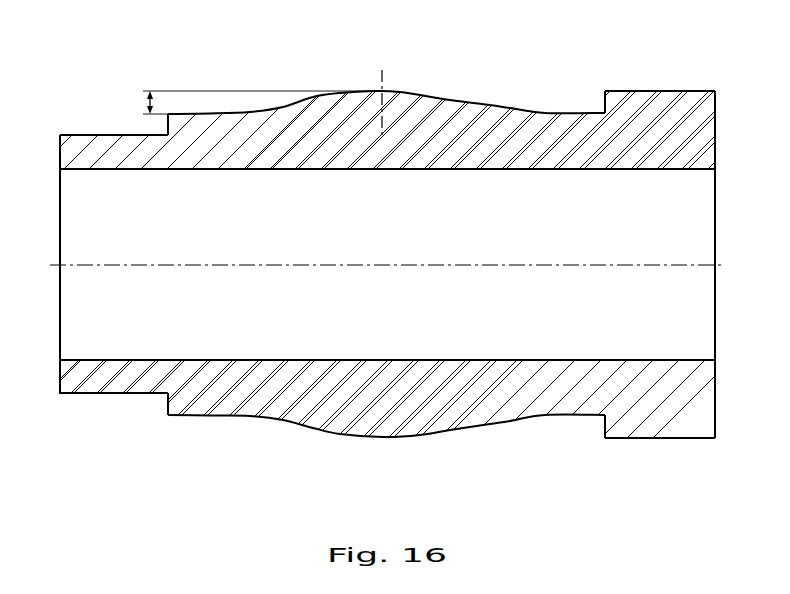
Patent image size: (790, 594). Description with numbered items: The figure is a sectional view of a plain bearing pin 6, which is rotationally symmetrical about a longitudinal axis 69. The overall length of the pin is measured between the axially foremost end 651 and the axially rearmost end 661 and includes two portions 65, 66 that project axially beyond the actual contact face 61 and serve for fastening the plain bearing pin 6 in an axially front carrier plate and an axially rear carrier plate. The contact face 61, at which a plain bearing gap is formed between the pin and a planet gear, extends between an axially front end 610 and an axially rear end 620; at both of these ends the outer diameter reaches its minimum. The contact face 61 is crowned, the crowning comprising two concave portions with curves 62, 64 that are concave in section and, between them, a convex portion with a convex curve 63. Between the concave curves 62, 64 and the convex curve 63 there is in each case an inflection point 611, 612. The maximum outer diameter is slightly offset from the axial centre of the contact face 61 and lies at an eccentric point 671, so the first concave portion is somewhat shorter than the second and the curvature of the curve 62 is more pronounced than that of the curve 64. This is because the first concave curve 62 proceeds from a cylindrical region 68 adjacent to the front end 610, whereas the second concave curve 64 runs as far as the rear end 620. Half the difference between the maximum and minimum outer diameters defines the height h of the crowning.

The plain bearing pin 6 is at (302, 448).
The contact face 61 is at (522, 102).
The inflection point 611 is at (313, 96).
The inflection point 612 is at (489, 102).
The concave curve 62 is at (283, 107).
The axially rear end of the contact face 620 is at (602, 110).
The convex curve 63 is at (398, 91).
The concave curve 64 is at (560, 113).
The axially projecting portion 65 is at (100, 132).
The axially foremost end 651 is at (56, 133).
The axially projecting portion 66 is at (664, 90).
The axially rearmost end 661 is at (716, 91).
The eccentric point 671 is at (381, 78).
The cylindrical region 68 is at (210, 110).
The longitudinal axis 69 is at (721, 262).
The axially front end of the contact face 610 is at (166, 113).
The height of the crowning h is at (147, 102).